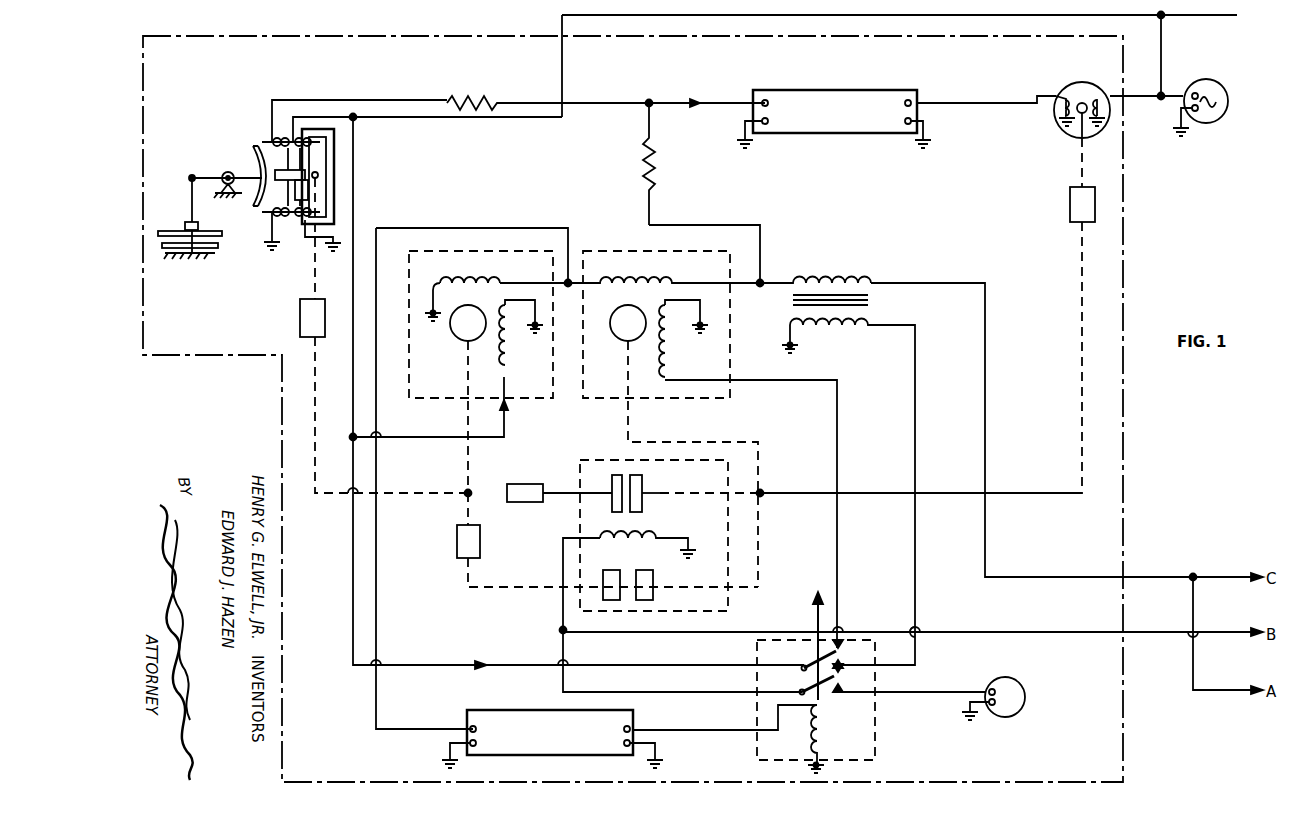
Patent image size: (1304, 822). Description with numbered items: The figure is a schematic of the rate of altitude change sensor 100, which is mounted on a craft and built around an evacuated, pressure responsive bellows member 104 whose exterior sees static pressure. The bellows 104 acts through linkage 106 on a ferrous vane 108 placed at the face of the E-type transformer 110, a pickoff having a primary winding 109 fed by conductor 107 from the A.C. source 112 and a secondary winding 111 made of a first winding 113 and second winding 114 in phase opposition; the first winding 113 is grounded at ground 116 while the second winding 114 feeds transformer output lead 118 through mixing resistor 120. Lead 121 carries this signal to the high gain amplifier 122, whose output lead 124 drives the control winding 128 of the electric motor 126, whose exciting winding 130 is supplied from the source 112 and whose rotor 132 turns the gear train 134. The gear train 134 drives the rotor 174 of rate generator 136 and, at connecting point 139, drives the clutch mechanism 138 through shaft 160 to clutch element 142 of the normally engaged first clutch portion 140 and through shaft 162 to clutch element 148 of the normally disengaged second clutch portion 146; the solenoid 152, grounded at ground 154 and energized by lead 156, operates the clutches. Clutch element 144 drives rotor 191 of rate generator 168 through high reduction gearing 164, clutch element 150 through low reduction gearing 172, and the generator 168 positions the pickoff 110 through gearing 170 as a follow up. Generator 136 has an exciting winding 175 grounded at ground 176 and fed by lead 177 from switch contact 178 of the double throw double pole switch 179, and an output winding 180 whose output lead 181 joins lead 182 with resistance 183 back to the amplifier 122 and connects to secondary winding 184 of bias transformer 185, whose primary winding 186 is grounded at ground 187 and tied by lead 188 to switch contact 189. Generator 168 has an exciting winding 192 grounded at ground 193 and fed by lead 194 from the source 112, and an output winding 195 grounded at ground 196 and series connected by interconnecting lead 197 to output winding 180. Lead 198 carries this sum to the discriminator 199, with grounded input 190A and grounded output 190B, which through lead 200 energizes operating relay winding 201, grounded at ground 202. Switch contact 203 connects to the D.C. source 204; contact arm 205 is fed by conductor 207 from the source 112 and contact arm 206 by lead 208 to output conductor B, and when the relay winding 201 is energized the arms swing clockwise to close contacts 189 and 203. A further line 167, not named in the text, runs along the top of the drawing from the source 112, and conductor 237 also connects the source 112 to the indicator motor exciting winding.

The sensor 100 is at (275, 382).
The bellows member 104 is at (223, 250).
The linkage 106 is at (190, 205).
The conductor 107 is at (510, 128).
The vane 108 is at (258, 162).
The primary winding 109 is at (297, 197).
The E-type transformer 110 is at (322, 158).
The secondary winding 111 is at (262, 214).
The source of A.C. exciting voltage 112 is at (1218, 92).
The first winding 113 is at (293, 216).
The second winding 114 is at (285, 138).
The ground 116 is at (270, 244).
The transformer output lead 118 is at (372, 98).
The mixing resistor 120 is at (475, 95).
The lead 121 is at (612, 100).
The high gain amplifier 122 is at (834, 119).
The output lead 124 is at (950, 97).
The electric motor 126 is at (1055, 128).
The control winding 128 is at (1060, 113).
The exciting winding 130 is at (1099, 120).
The rotor 132 is at (1084, 102).
The gear train 134 is at (1068, 205).
The rate generator 136 is at (602, 402).
The clutch mechanism 138 is at (575, 510).
The connecting point 139 is at (768, 493).
The first clutch portion 140 is at (620, 470).
The clutch element 142 is at (644, 480).
The clutch element 144 is at (583, 490).
The second clutch portion 146 is at (627, 607).
The clutch element 148 is at (653, 590).
The clutch element 150 is at (603, 588).
The solenoid 152 is at (648, 537).
The ground 154 is at (694, 546).
The lead 156 is at (563, 545).
The shaft 160 is at (665, 492).
The shaft 162 is at (762, 498).
The high reduction gearing 164 is at (540, 480).
The conductor 167 is at (880, 30).
The rate generator 168 is at (420, 401).
The gearing 170 is at (298, 318).
The low reduction gearing 172 is at (455, 540).
The rotor 174 is at (617, 338).
The exciting winding 175 is at (672, 342).
The ground 176 is at (703, 327).
The lead 177 is at (835, 428).
The switch contact 178 is at (840, 642).
The double throw double pole switch 179 is at (880, 705).
The output winding 180 is at (650, 268).
The output lead 181 is at (690, 280).
The lead 182 is at (710, 225).
The resistance 183 is at (640, 167).
The secondary winding 184 is at (810, 275).
The bias transformer 185 is at (878, 274).
The primary winding 186 is at (832, 327).
The ground 187 is at (788, 346).
The lead 188 is at (918, 376).
The switch contact 189 is at (842, 665).
The grounded input 190A is at (448, 755).
The grounded output 190B is at (657, 755).
The rotor 191 is at (456, 338).
The exciting winding 192 is at (508, 340).
The ground 193 is at (538, 322).
The lead 194 is at (506, 428).
The output winding 195 is at (472, 280).
The ground 196 is at (430, 315).
The interconnecting lead 197 is at (536, 270).
The lead 198 is at (380, 603).
The discriminator 199 is at (550, 732).
The lead 200 is at (665, 727).
The operating relay winding 201 is at (822, 738).
The ground 202 is at (822, 766).
The switch contact 203 is at (845, 690).
The source of D.C. voltage 204 is at (1022, 690).
The contact arm 205 is at (818, 658).
The contact arm 206 is at (818, 683).
The conductor 207 is at (440, 665).
The lead 208 is at (563, 690).
The conductor 237 is at (1200, 18).